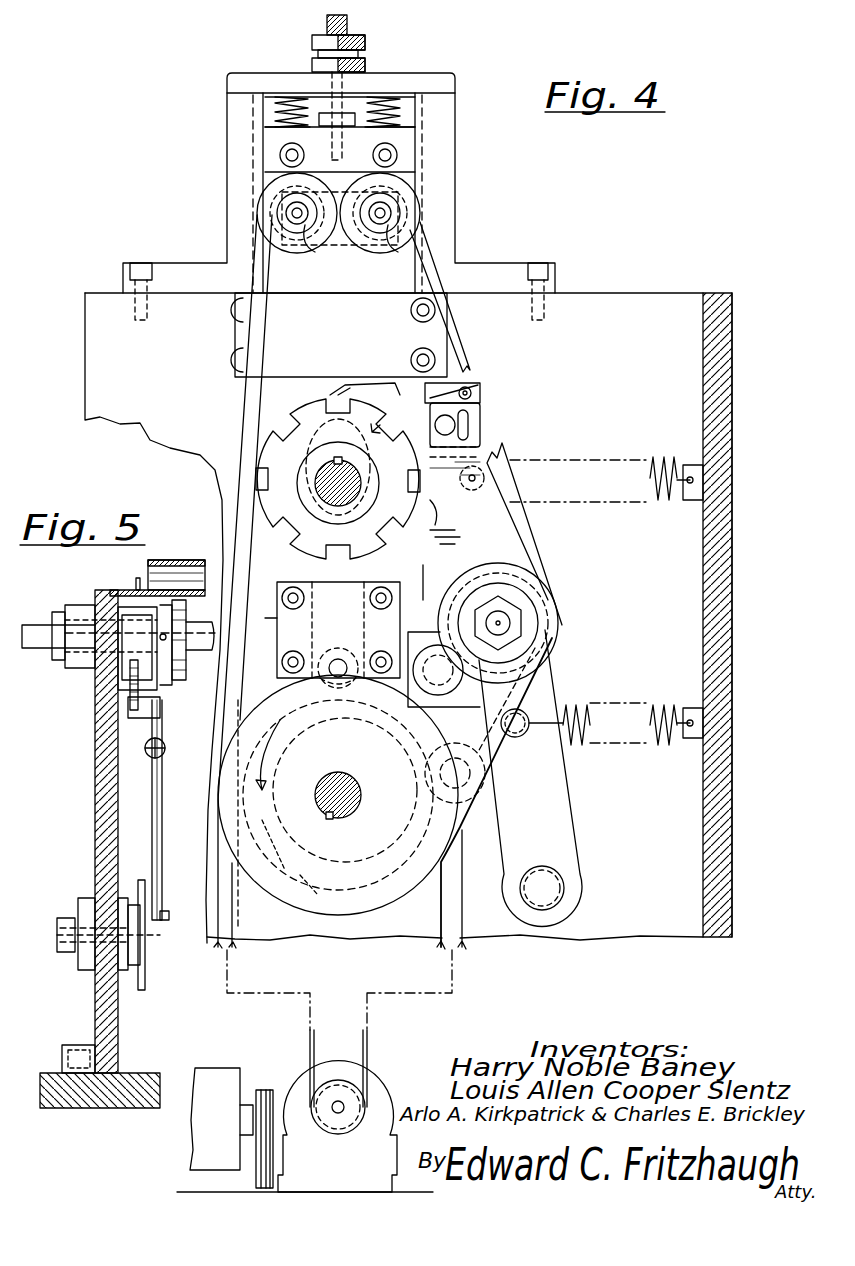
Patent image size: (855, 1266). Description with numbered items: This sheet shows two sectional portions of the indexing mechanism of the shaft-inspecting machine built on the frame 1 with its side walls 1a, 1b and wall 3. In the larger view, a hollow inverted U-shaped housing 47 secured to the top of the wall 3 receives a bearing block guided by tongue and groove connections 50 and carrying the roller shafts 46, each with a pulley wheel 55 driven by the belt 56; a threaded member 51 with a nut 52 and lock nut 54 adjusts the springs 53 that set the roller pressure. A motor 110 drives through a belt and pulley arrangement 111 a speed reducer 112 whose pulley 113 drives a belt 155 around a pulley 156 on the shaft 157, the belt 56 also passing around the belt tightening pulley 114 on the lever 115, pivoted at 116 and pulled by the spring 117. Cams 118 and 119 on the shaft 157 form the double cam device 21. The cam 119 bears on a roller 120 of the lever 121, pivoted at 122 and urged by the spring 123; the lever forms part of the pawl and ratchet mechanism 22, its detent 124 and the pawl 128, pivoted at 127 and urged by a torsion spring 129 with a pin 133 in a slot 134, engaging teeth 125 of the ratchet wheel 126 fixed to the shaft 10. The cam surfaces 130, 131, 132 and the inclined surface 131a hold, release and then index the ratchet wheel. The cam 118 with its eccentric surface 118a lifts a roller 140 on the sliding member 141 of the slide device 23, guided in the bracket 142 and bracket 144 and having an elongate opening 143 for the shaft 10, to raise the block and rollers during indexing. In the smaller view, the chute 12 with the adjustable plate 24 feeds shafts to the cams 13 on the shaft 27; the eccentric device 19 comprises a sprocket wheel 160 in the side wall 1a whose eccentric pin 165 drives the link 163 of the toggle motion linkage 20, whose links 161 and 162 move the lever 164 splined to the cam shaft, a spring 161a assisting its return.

In FIG. 5, the machine frame 1 is at (125, 1075).
In FIG. 5, the side wall 1a is at (100, 822).
In FIG. 4, the side wall 1b is at (733, 812).
In FIG. 4, the wall 3 is at (655, 300).
In FIG. 4, the shaft 10 is at (345, 500).
In FIG. 5, the chute 12 is at (160, 590).
In FIG. 5, the cams 13 is at (180, 680).
In FIG. 5, the eccentric device 19 is at (148, 930).
In FIG. 5, the toggle motion linkage 20 is at (168, 800).
In FIG. 4, the double cam device 21 is at (373, 865).
In FIG. 4, the pawl and ratchet mechanism 22 is at (290, 400).
In FIG. 4, the slide device 23 is at (300, 575).
In FIG. 5, the plate 24 is at (190, 560).
In FIG. 5, the shaft 27 is at (200, 648).
In FIG. 4, the shafts 46 is at (365, 248).
In FIG. 4, the housing 47 is at (227, 183).
In FIG. 4, the tongue and groove connections 50 is at (253, 152).
In FIG. 4, the threaded member 51 is at (327, 25).
In FIG. 4, the nut 52 is at (365, 66).
In FIG. 4, the springs 53 is at (275, 110).
In FIG. 4, the lock nut 54 is at (365, 44).
In FIG. 4, the pulley wheel 55 is at (258, 215).
In FIG. 4, the belt 56 is at (470, 350).
In FIG. 4, the motor 110 is at (222, 1068).
In FIG. 4, the belt and pulley arrangement 111 is at (264, 1090).
In FIG. 4, the speed reducer 112 is at (385, 1090).
In FIG. 4, the pulley 113 is at (338, 1080).
In FIG. 4, the belt tightening pulley 114 is at (555, 610).
In FIG. 4, the lever 115 is at (562, 793).
In FIG. 4, the pivot 116 is at (560, 888).
In FIG. 4, the spring 117 is at (657, 745).
In FIG. 4, the cam 118 is at (338, 915).
In FIG. 4, the eccentric surface 118a is at (260, 870).
In FIG. 4, the cam 119 is at (282, 815).
In FIG. 4, the roller 120 is at (500, 790).
In FIG. 4, the lever 121 is at (420, 565).
In FIG. 4, the pivot 122 is at (448, 692).
In FIG. 4, the spring 123 is at (658, 458).
In FIG. 4, the detent 124 is at (440, 490).
In FIG. 4, the teeth 125 is at (420, 530).
In FIG. 4, the ratchet wheel 126 is at (256, 478).
In FIG. 4, the pivot 127 is at (442, 418).
In FIG. 4, the pawl 128 is at (385, 385).
In FIG. 4, the torsion spring 129 is at (470, 390).
In FIG. 4, the surface 130 is at (446, 791).
In FIG. 4, the surface 131 is at (338, 795).
In FIG. 4, the angularly inclined surface 131a is at (345, 782).
In FIG. 4, the surface 132 is at (289, 750).
In FIG. 4, the pin 133 is at (468, 414).
In FIG. 4, the slot 134 is at (470, 430).
In FIG. 4, the roller 140 is at (338, 658).
In FIG. 4, the sliding member 141 is at (338, 630).
In FIG. 4, the bracket 142 is at (280, 618).
In FIG. 4, the elongate opening 143 is at (312, 440).
In FIG. 4, the bracket 144 is at (235, 335).
In FIG. 4, the belt 155 is at (465, 975).
In FIG. 4, the pulley 156 is at (457, 878).
In FIG. 4, the shaft 157 is at (338, 806).
In FIG. 5, the sprocket wheel 160 is at (146, 985).
In FIG. 5, the link 161 is at (140, 722).
In FIG. 5, the spring 161a is at (166, 746).
In FIG. 5, the link 162 is at (130, 695).
In FIG. 5, the link 163 is at (162, 845).
In FIG. 5, the lever 164 is at (125, 638).
In FIG. 5, the eccentric pin 165 is at (168, 912).